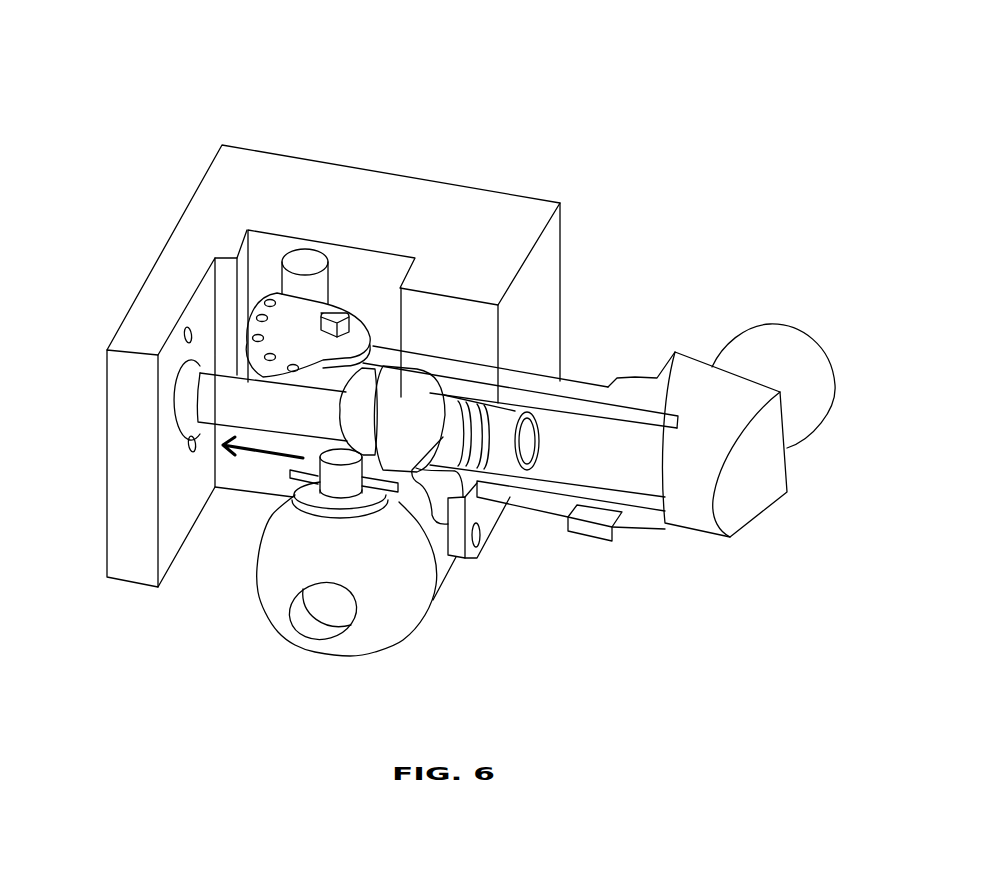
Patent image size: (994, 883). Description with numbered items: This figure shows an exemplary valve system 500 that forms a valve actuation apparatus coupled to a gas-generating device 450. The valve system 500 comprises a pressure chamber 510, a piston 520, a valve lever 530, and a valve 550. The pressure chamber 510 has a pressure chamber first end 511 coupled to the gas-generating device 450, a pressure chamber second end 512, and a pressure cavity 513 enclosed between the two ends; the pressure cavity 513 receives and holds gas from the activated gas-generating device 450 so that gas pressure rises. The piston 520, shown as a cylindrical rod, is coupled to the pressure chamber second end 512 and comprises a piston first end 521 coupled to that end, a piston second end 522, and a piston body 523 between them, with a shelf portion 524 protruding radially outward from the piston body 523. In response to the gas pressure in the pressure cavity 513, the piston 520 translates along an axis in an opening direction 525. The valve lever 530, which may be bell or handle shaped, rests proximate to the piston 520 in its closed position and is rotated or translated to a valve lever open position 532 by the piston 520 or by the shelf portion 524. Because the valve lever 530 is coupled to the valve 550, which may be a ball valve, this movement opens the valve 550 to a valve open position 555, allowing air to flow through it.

The valve system 500 is at (160, 87).
The pressure chamber 510 is at (675, 352).
The pressure chamber first end 511 is at (697, 472).
The pressure chamber second end 512 is at (403, 377).
The pressure cavity 513 is at (597, 445).
The piston 520 is at (489, 530).
The piston first end 521 is at (503, 430).
The piston second end 522 is at (237, 385).
The piston body 523 is at (244, 385).
The shelf portion 524 is at (360, 392).
The opening direction 525 is at (310, 464).
The valve lever 530 is at (260, 392).
The valve lever open position 532 is at (265, 276).
The valve 550 is at (400, 570).
The valve open position 555 is at (330, 607).
The gas-generating device 450 is at (800, 397).